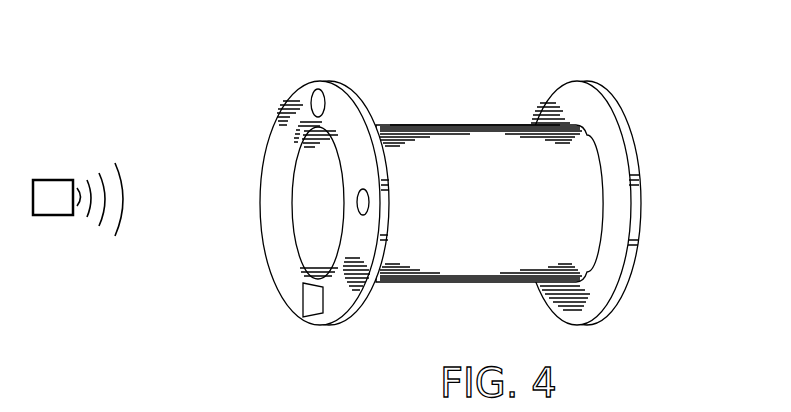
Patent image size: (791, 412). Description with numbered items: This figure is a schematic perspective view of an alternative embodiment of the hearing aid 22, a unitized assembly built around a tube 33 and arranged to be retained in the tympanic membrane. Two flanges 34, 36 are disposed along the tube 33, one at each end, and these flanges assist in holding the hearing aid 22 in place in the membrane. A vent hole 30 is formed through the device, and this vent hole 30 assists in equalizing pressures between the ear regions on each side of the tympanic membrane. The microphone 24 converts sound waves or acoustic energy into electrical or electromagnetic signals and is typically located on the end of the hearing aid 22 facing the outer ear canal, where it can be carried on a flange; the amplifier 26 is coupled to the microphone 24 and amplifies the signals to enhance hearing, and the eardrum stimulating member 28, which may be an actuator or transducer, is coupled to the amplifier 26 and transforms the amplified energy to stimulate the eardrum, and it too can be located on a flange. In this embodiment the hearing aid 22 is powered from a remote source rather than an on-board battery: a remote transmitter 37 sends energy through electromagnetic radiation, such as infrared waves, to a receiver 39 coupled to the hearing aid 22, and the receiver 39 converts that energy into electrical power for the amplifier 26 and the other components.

The hearing aid 22 is at (604, 83).
The microphone 24 is at (307, 297).
The amplifier 26 is at (396, 283).
The eardrum stimulating member 28 is at (313, 98).
The vent hole 30 is at (313, 215).
The tube 33 is at (403, 127).
The flange 34 is at (282, 143).
The flange 36 is at (633, 157).
The remote transmitter 37 is at (53, 215).
The receiver 39 is at (362, 190).